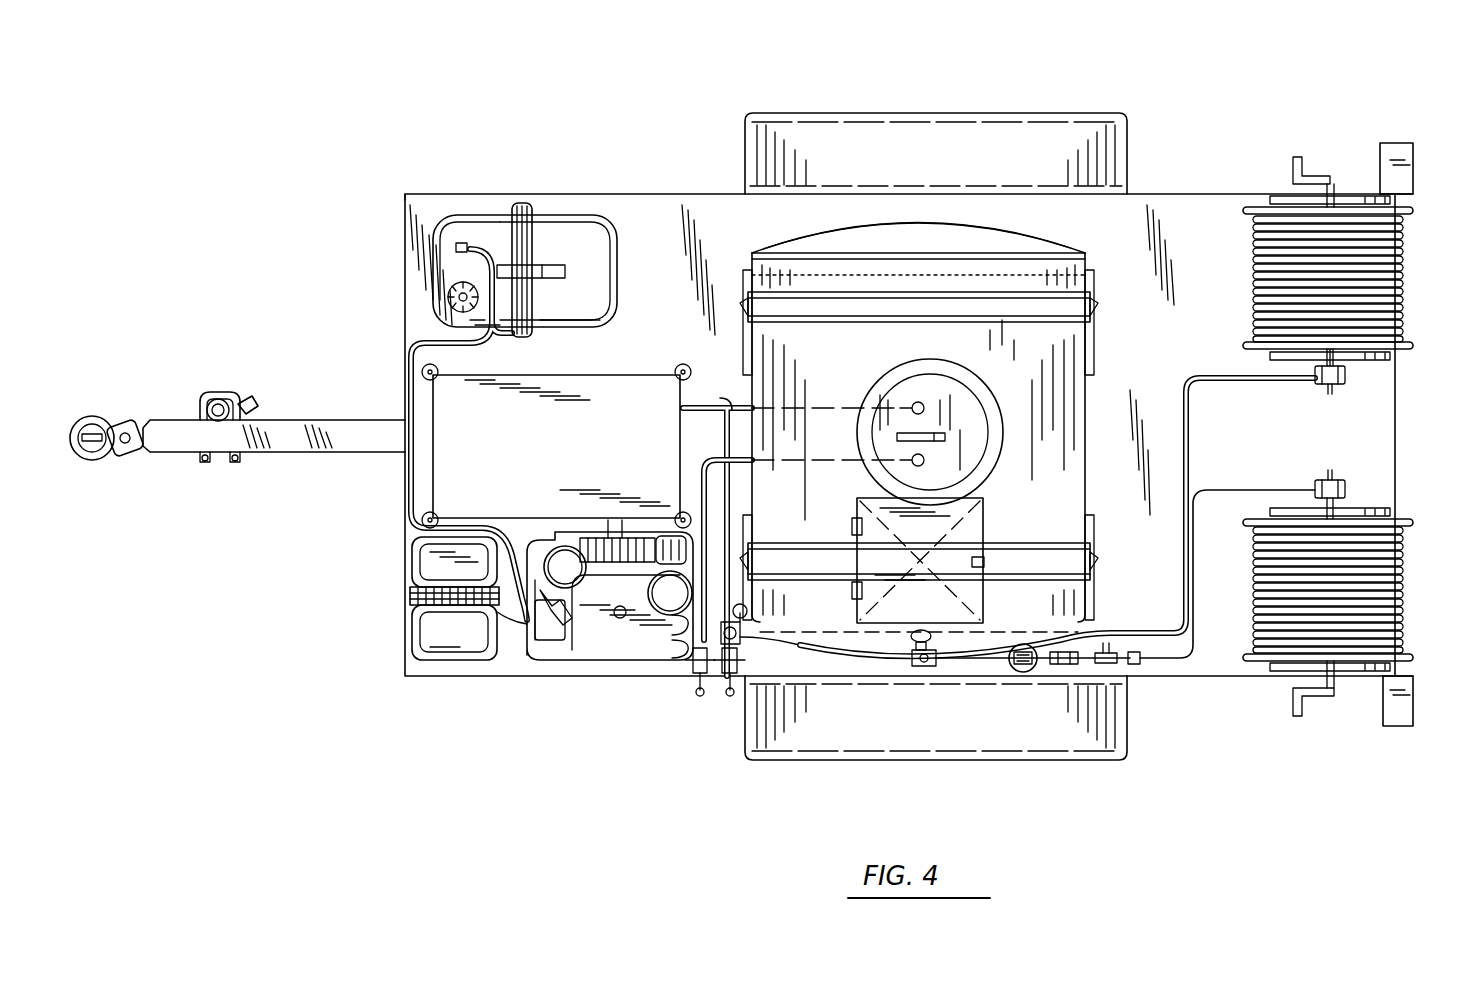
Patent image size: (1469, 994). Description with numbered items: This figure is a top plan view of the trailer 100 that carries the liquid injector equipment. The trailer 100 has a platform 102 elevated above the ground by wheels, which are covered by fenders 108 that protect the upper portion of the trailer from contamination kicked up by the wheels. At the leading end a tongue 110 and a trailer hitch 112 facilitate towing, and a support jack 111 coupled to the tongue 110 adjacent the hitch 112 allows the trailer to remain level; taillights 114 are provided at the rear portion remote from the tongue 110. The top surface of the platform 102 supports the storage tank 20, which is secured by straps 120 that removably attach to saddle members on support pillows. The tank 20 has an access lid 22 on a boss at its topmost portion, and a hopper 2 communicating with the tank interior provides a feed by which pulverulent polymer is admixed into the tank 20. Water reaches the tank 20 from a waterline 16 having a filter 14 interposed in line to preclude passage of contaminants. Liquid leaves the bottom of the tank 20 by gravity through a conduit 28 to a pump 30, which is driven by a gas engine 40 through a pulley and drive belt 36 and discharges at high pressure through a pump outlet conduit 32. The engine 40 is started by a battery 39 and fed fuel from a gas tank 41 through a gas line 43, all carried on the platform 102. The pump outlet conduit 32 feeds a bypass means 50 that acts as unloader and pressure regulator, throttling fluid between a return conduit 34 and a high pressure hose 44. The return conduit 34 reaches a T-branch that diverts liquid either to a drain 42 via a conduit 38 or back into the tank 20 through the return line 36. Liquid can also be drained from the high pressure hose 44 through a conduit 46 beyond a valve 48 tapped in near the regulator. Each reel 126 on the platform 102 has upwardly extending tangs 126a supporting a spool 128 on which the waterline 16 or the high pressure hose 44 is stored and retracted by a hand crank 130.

The trailer 100 is at (398, 162).
The platform 102 is at (1195, 339).
The fenders 108 is at (962, 164).
The tongue 110 is at (356, 422).
The support jack 111 is at (228, 402).
The trailer hitch 112 is at (92, 428).
The taillights 114 is at (1392, 148).
The straps 120 is at (1013, 306).
The reel 126 is at (1380, 512).
The tangs 126a is at (1376, 362).
The spool 128 is at (1402, 213).
The hand crank 130 is at (1292, 164).
The storage tank 20 is at (952, 288).
The access lid 22 is at (948, 412).
The hopper 2 is at (927, 547).
The conduit 28 is at (715, 410).
The pump 30 is at (565, 458).
The pump outlet conduit 32 is at (712, 402).
The return conduit 34 is at (718, 652).
The return line 36 is at (700, 474).
The conduit 38 is at (698, 645).
The battery 39 is at (467, 647).
The engine 40 is at (629, 601).
The gas tank 41 is at (578, 256).
The drain 42 is at (700, 674).
The gas line 43 is at (407, 352).
The high pressure hose 44 is at (1405, 292).
The conduit 46 is at (752, 646).
The valve 48 is at (730, 676).
The bypass means 50 is at (746, 636).
The filter 14 is at (1023, 672).
The waterline 16 is at (1406, 598).